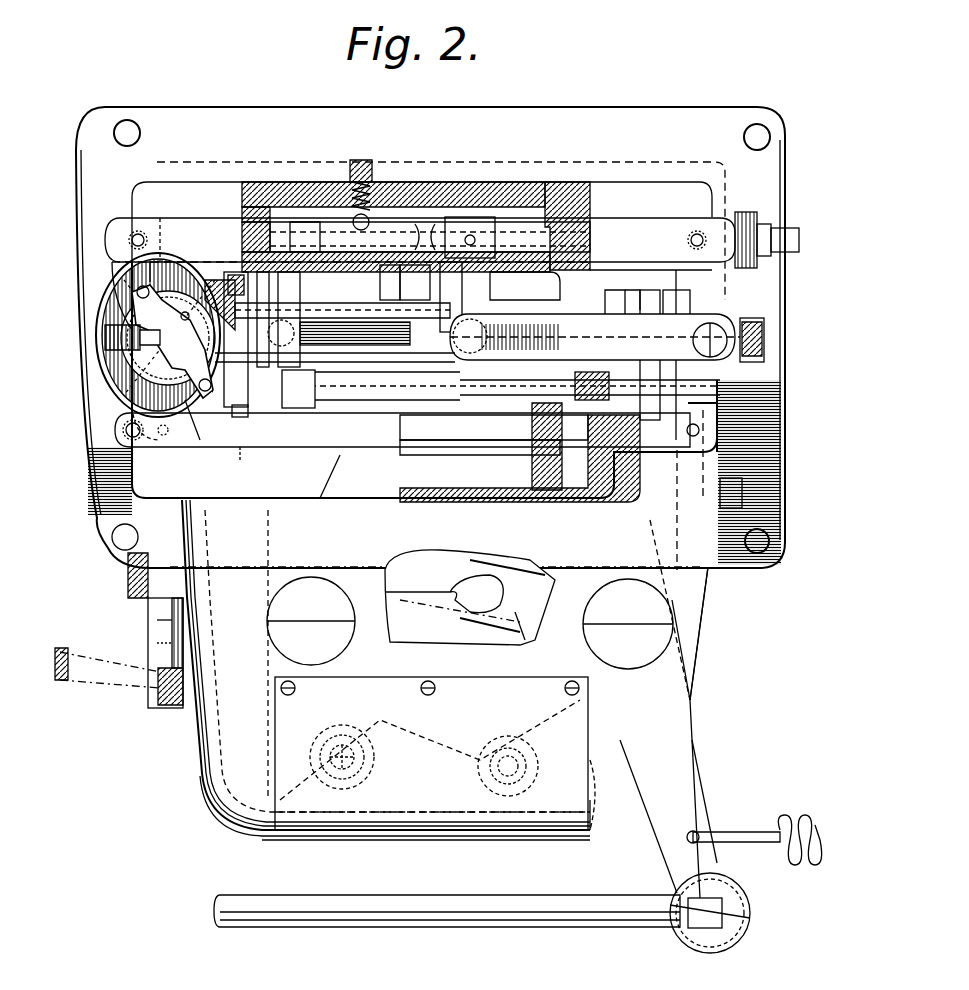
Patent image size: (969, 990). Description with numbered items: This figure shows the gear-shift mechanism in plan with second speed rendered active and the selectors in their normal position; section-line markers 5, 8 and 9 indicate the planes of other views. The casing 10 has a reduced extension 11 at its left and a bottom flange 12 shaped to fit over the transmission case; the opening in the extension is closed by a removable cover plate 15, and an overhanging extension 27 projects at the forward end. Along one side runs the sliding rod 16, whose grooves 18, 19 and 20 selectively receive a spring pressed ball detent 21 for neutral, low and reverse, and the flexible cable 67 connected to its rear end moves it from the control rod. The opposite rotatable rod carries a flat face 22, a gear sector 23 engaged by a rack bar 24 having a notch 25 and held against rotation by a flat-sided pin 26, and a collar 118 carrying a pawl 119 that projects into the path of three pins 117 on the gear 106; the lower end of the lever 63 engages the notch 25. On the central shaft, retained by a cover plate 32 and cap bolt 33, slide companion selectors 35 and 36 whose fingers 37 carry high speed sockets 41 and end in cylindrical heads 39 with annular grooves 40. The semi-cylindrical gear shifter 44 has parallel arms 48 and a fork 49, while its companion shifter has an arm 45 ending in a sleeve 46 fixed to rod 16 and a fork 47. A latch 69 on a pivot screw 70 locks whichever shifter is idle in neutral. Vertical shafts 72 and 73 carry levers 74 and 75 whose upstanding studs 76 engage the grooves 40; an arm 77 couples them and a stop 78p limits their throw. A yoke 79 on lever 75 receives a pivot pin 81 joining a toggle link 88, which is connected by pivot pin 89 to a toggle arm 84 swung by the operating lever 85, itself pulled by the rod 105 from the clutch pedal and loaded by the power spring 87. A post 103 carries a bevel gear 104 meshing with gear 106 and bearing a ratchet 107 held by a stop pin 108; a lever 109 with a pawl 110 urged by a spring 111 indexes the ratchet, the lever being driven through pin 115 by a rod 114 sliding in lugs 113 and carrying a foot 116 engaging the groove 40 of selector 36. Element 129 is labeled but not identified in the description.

The section line 5- 5 is at (157, 770).
The section line 8- 8 is at (800, 331).
The section line 9- 9 is at (634, 965).
The casing 10 is at (538, 182).
The reduced extension 11 is at (230, 822).
The bottom flange 12 is at (578, 108).
The removable cover plate 15 is at (431, 753).
The rod 16 is at (568, 215).
The groove 18 is at (330, 300).
The groove 19 is at (426, 222).
The groove 20 is at (292, 222).
The spring pressed ball detent 21 is at (350, 200).
The flat face 22 is at (462, 490).
The gear sector 23 is at (130, 395).
The rack bar 24 is at (152, 620).
The notch 25 is at (165, 700).
The flat-sided pin 26 is at (118, 545).
The overhanging extension 27 is at (135, 325).
The cover plate 32 is at (740, 322).
The cap bolt 33 is at (758, 320).
The selector 35 is at (266, 300).
The selector 36 is at (630, 290).
The fingers 37 is at (390, 290).
The cylindrical head 39 is at (668, 300).
The annular groove 40 is at (628, 300).
The high speed sockets 41 is at (410, 372).
The gear shifter 44 is at (462, 372).
The arm 45 is at (360, 310).
The sleeve 46 is at (482, 217).
The fork 47 is at (525, 295).
The arms 48 is at (530, 460).
The fork 49 is at (410, 293).
The lever 63 is at (68, 650).
The flexible cable 67 is at (790, 228).
The latch 69 is at (580, 318).
The pivot screw 70 is at (715, 345).
The shaft 72 is at (628, 624).
The shaft 73 is at (311, 621).
The lever 74 is at (722, 580).
The lever 75 is at (265, 565).
The upstanding studs 76 is at (410, 618).
The arm 77 is at (525, 625).
The stop 78p is at (745, 492).
The yoke 79 is at (280, 718).
The pivot pin 81 is at (342, 745).
The toggle arm 84 is at (540, 815).
The operating lever 85 is at (690, 816).
The power spring 87 is at (800, 815).
The toggle link 88 is at (398, 800).
The pivot pin 89 is at (502, 780).
The post 103 is at (135, 375).
The bevel gear 104 is at (205, 280).
The rod 105 is at (385, 915).
The gear 106 is at (220, 280).
The ratchet 107 is at (140, 320).
The spring pressed stop pin 108 is at (128, 345).
The lever 109 is at (120, 240).
The pawl 110 is at (172, 262).
The spring 111 is at (95, 262).
The lugs 113 is at (580, 372).
The rod 114 is at (350, 400).
The pin 115 is at (200, 408).
The foot 116 is at (665, 360).
The pins 117 is at (240, 300).
The collar 118 is at (244, 417).
The pawl 119 is at (240, 447).
The link 129 is at (200, 447).